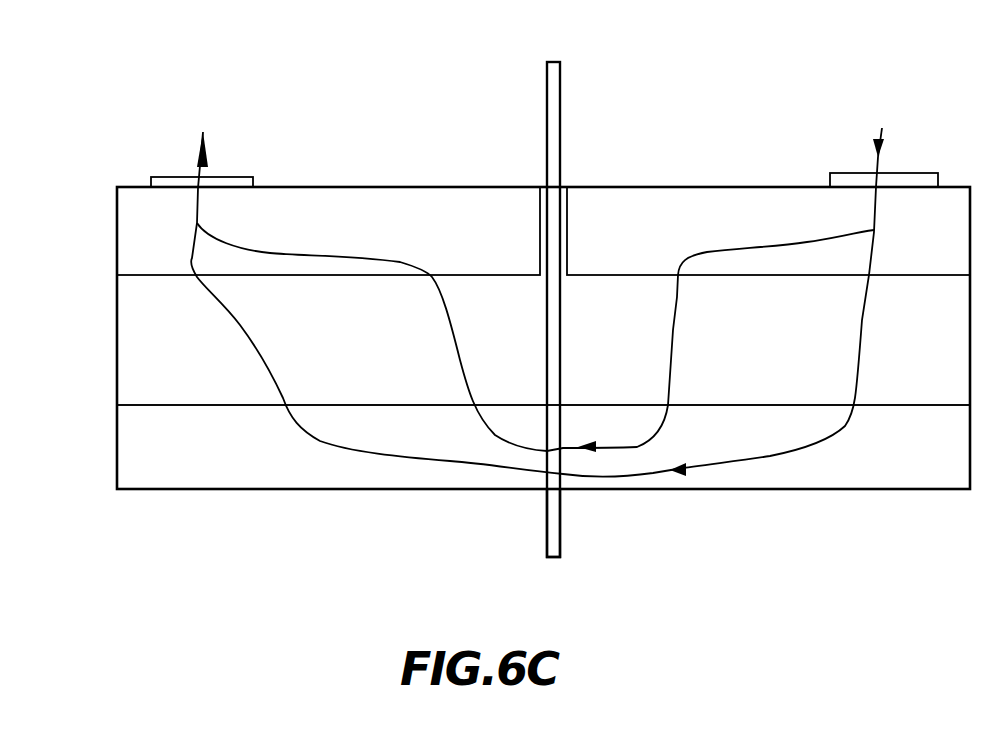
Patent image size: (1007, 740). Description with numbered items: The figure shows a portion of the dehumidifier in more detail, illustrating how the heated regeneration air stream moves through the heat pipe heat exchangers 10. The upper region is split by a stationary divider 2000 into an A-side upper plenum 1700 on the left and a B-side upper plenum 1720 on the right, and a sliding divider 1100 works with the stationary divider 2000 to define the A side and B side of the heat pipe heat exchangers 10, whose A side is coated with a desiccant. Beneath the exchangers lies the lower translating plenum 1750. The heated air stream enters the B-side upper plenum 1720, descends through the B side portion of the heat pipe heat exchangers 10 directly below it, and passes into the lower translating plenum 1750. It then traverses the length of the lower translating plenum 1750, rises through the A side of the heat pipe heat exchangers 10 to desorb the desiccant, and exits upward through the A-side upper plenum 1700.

The heat pipe heat exchanger 10 is at (117, 325).
The lower plenum 1750 is at (117, 437).
The A-side upper plenum 1700 is at (328, 226).
The B-side upper plenum 1720 is at (768, 224).
The stationary divider 2000 is at (561, 90).
The sliding divider 1100 is at (561, 537).